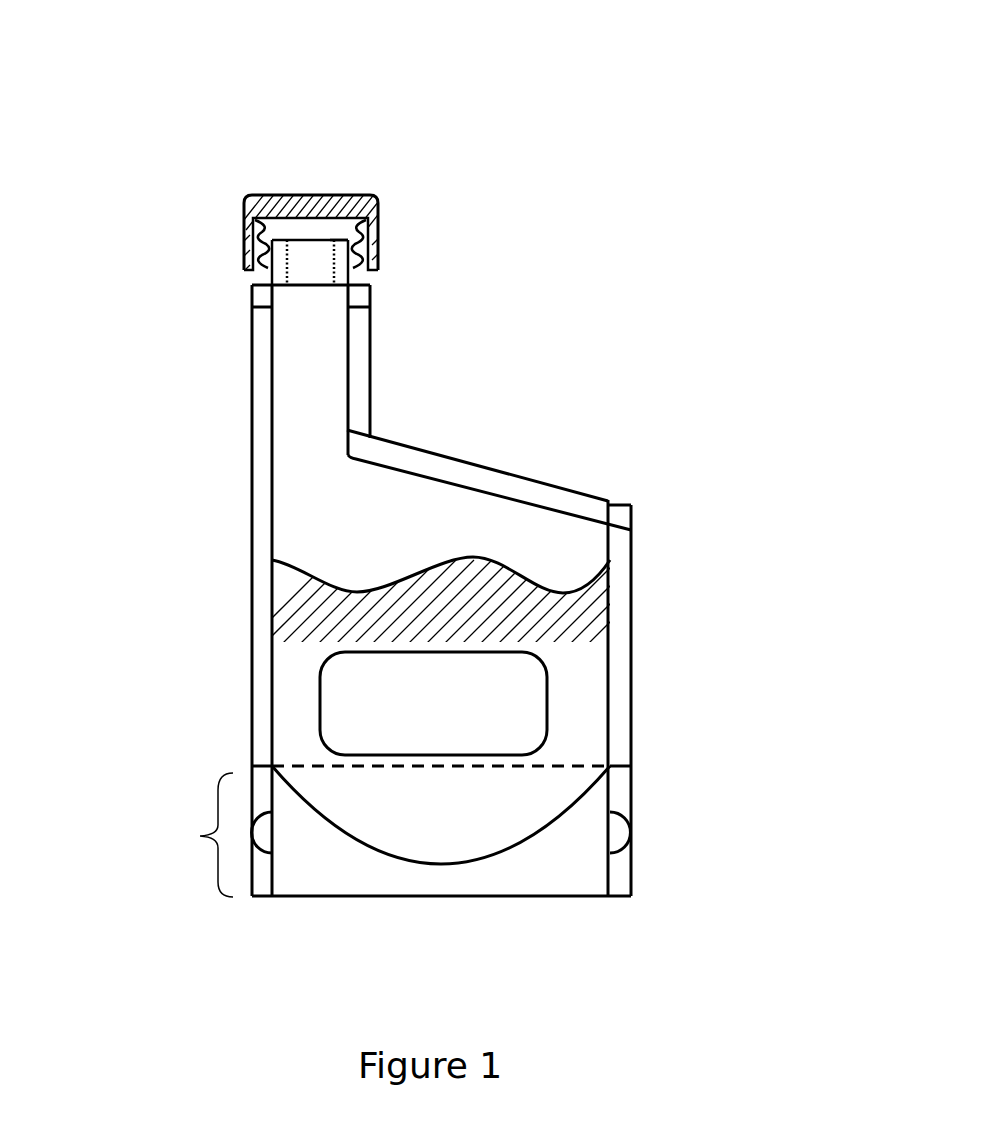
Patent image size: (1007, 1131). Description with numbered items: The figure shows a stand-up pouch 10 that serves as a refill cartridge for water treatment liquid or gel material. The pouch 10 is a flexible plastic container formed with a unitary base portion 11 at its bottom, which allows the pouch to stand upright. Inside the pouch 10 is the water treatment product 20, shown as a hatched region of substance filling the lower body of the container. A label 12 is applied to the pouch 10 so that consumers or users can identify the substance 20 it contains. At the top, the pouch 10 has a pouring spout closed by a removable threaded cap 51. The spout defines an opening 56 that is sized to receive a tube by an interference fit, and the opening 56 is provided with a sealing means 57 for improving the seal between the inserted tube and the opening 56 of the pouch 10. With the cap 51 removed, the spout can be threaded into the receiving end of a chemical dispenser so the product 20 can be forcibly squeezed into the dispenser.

The stand-up pouch 10 is at (610, 326).
The base portion 11 is at (199, 836).
The label 12 is at (336, 693).
The water treatment product 20 is at (563, 630).
The removable threaded cap 51 is at (262, 197).
The opening 56 is at (266, 269).
The sealing means 57 is at (344, 241).